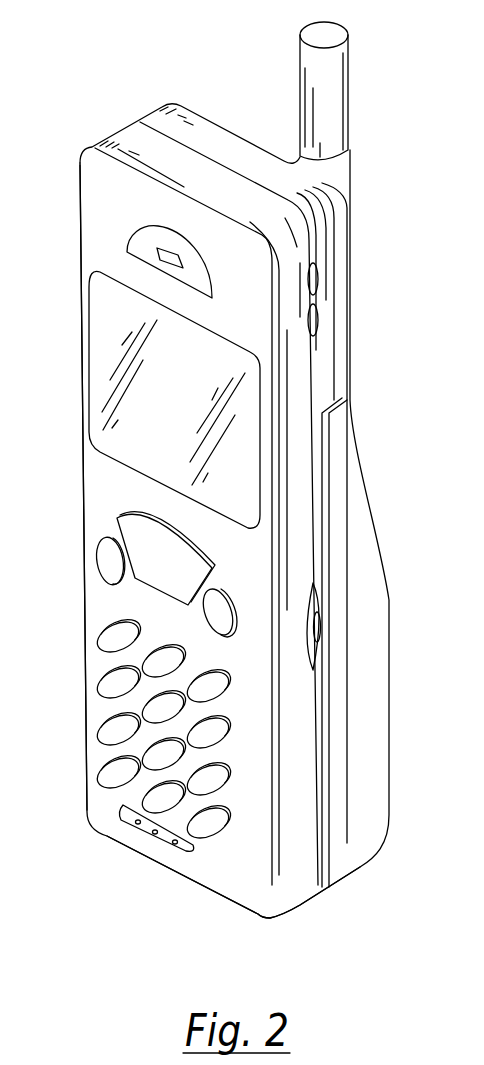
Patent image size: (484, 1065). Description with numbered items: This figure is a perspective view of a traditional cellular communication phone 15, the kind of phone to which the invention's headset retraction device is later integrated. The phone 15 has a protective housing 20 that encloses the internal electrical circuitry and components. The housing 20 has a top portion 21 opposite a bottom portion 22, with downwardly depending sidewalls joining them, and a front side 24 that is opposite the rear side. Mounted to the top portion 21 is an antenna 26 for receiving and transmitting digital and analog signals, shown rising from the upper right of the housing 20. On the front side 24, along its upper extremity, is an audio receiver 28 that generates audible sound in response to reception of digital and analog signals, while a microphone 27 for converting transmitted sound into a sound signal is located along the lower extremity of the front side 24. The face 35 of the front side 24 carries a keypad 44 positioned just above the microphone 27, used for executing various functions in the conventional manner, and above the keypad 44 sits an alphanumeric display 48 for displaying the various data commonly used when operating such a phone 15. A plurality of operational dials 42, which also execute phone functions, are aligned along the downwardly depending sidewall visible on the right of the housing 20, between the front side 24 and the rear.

The cellular communication phone 15 is at (380, 388).
The protective housing 20 is at (95, 233).
The top portion 21 is at (212, 132).
The bottom portion 22 is at (300, 907).
The front side 24 is at (92, 462).
The antenna 26 is at (337, 38).
The microphone 27 is at (175, 844).
The audio receiver 28 is at (157, 247).
The face 35 is at (133, 730).
The operational dials 42 is at (318, 293).
The keypad 44 is at (106, 677).
The alphanumeric display 48 is at (112, 335).